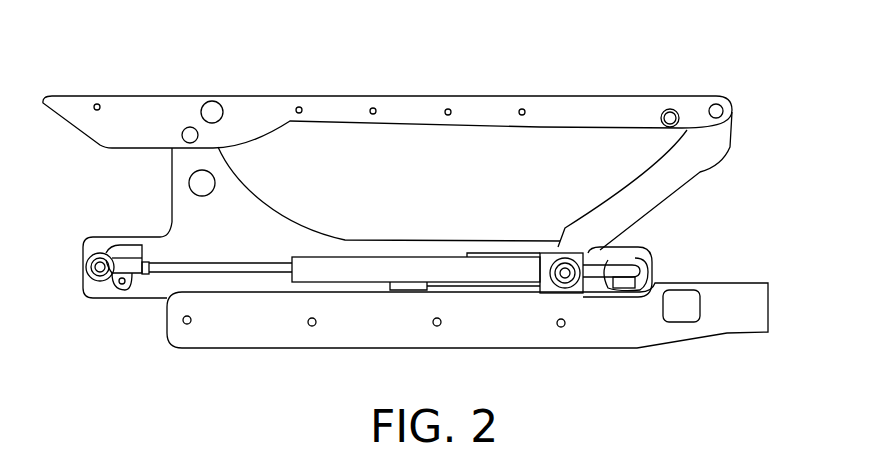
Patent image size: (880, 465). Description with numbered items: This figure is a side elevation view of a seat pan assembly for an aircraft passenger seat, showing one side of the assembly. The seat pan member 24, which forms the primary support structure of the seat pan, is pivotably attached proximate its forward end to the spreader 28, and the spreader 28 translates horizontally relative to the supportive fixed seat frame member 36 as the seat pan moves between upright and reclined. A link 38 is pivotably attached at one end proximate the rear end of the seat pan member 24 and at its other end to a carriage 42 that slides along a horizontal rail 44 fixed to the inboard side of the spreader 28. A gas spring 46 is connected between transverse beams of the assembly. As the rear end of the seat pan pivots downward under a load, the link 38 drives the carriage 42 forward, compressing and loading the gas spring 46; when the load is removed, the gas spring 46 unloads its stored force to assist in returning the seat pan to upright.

The right seat pan member 24 is at (497, 110).
The right spreader 28 is at (187, 210).
The right fixed seat frame member 36 is at (577, 330).
The link 38 is at (678, 170).
The carriage 42 is at (560, 263).
The horizontal rail 44 is at (640, 267).
The gas spring 46 is at (340, 267).